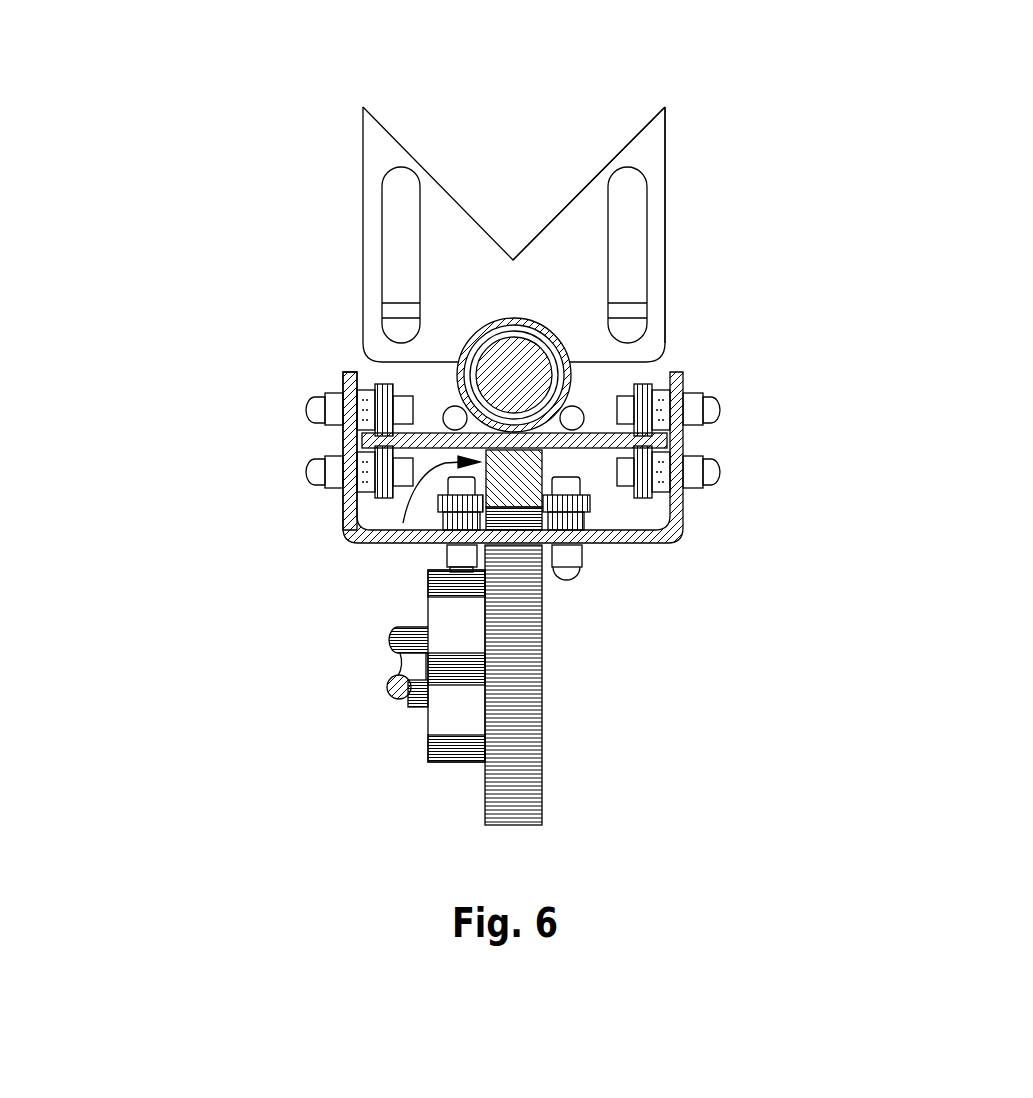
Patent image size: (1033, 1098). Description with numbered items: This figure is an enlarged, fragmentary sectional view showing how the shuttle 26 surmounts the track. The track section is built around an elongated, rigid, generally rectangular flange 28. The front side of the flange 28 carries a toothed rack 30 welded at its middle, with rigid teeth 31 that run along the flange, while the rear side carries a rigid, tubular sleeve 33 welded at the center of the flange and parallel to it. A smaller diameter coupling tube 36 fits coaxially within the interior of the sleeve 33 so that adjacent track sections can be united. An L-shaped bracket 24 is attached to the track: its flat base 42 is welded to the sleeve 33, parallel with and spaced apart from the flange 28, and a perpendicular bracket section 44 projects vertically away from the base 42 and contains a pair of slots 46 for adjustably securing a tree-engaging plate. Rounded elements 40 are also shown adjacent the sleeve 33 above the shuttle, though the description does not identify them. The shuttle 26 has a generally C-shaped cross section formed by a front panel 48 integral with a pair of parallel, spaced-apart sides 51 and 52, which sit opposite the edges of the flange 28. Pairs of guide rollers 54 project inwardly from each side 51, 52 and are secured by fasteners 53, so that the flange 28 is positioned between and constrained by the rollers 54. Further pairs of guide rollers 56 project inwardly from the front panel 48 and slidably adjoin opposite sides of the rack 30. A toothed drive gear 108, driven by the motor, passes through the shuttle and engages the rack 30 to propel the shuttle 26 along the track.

The bracket 24 is at (500, 187).
The shuttle 26 is at (473, 504).
The flange 28 is at (648, 540).
The toothed rack 30 is at (385, 543).
The teeth 31 is at (512, 507).
The sleeve 33 is at (525, 332).
The coupling tube 36 is at (653, 246).
The roller 40 is at (455, 417).
The base 42 is at (402, 302).
The perpendicular bracket section 44 is at (640, 150).
The slots 46 is at (400, 182).
The front panel 48 is at (417, 546).
The side 51 is at (343, 442).
The side 52 is at (685, 443).
The fasteners 53 is at (310, 467).
The guide rollers 54 is at (383, 492).
The guide rollers 56 is at (605, 542).
The drive gear 108 is at (542, 747).